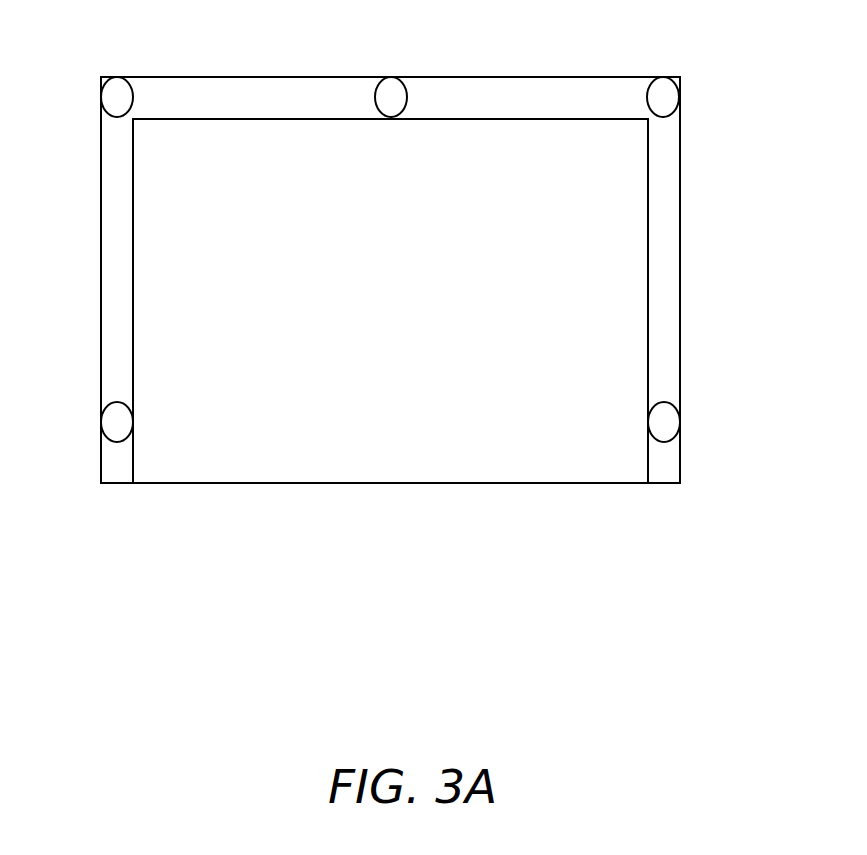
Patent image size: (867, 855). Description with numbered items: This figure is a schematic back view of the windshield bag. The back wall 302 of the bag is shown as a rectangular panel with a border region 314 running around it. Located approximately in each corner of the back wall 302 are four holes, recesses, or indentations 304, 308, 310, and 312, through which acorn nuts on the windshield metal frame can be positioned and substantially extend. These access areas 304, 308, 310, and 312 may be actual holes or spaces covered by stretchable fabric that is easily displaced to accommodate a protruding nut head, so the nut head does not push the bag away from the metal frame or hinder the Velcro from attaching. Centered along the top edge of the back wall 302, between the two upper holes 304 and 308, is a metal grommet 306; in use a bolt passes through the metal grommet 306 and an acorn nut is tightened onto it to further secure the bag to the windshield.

The back wall 302 is at (597, 470).
The hole 304 is at (117, 83).
The metal grommet 306 is at (391, 83).
The hole 308 is at (665, 83).
The hole 310 is at (108, 422).
The hole 312 is at (672, 422).
The side rail of frame 314 is at (667, 221).